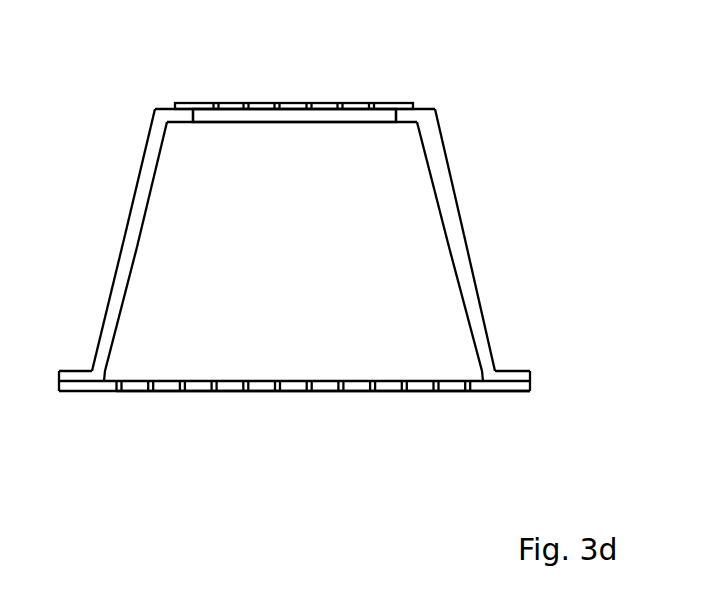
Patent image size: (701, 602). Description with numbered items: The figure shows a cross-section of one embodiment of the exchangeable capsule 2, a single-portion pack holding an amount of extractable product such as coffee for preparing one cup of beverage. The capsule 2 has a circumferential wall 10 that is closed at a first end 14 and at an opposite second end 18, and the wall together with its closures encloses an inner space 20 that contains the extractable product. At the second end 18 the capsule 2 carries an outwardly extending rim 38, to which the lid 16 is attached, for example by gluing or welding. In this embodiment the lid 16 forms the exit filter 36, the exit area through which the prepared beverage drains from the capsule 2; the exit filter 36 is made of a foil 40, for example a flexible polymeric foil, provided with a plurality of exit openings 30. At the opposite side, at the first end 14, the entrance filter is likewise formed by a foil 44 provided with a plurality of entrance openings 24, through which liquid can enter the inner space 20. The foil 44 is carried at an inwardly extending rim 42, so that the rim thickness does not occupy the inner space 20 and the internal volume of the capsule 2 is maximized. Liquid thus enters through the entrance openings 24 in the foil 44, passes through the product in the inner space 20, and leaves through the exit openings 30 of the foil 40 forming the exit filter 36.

The exchangeable capsule 2 is at (337, 252).
The circumferential wall 10 is at (471, 265).
The first end 14 is at (428, 128).
The lid 16 is at (482, 392).
The second end 18 is at (485, 353).
The inner space 20 is at (220, 208).
The entrance openings 24 is at (222, 92).
The exit openings 30 is at (128, 402).
The exit filter 36 is at (294, 406).
The outwardly extending rim 38 is at (520, 376).
The foil 40 is at (103, 391).
The inwardly extending rim 42 is at (407, 116).
The foil 44 is at (400, 102).